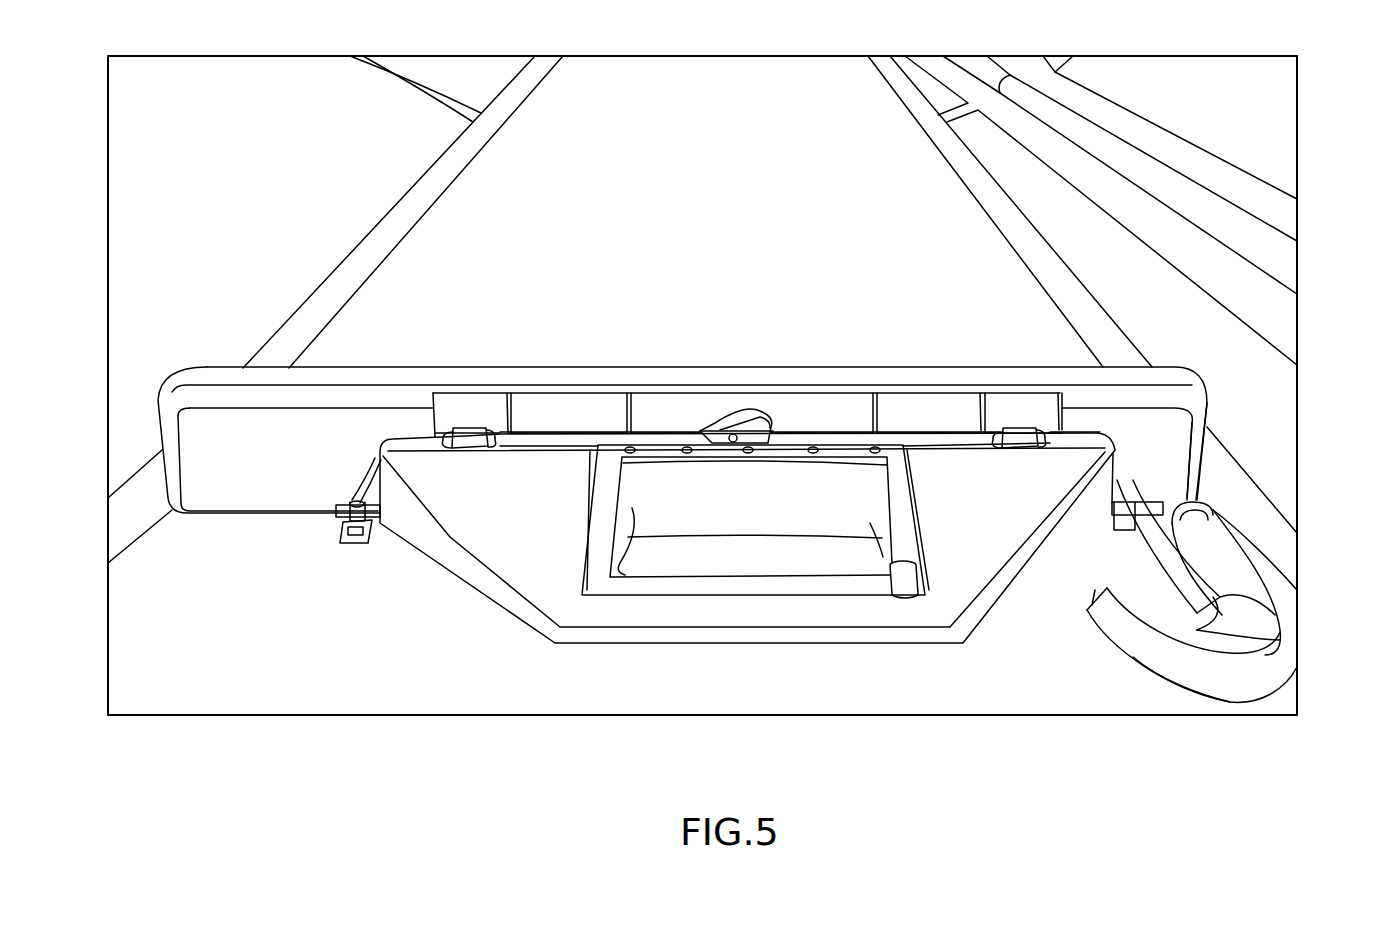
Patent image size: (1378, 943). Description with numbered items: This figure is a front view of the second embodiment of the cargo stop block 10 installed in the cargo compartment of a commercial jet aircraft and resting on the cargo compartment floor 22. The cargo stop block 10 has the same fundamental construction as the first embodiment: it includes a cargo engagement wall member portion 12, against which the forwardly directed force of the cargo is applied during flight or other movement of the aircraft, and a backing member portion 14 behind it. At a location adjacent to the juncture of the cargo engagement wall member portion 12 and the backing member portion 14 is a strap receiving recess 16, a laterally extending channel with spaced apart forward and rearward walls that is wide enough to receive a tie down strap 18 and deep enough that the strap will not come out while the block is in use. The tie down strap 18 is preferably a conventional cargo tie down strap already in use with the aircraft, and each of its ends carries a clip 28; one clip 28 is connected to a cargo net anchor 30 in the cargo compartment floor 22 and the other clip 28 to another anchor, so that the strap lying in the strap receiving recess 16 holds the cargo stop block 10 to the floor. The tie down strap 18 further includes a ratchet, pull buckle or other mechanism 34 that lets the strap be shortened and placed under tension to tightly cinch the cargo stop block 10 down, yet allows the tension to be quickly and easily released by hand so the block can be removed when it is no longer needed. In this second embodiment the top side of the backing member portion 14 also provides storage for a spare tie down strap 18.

The cargo stop block 10 is at (1257, 375).
The cargo engagement wall member portion 12 is at (1210, 420).
The backing member portion 14 is at (516, 562).
The strap receiving recess 16 is at (1113, 430).
The tie down strap 18 is at (838, 437).
The cargo compartment floor 22 is at (757, 692).
The clip 28 is at (345, 486).
The cargo net anchor 30 is at (352, 548).
The ratchet, pull buckle or other mechanism 34 is at (740, 406).